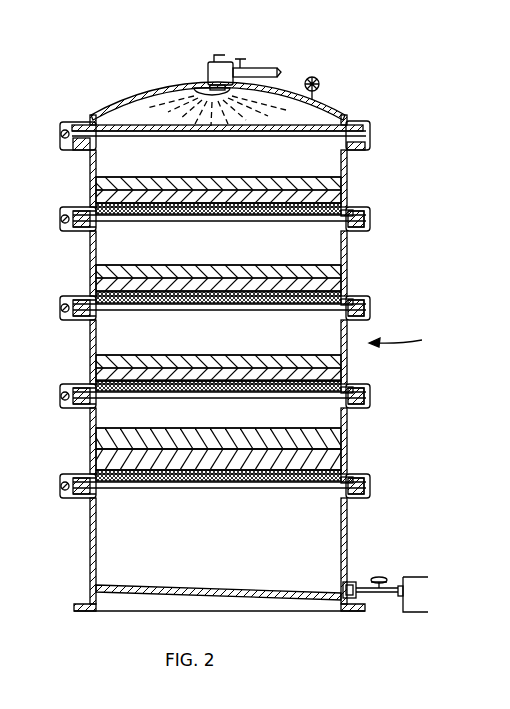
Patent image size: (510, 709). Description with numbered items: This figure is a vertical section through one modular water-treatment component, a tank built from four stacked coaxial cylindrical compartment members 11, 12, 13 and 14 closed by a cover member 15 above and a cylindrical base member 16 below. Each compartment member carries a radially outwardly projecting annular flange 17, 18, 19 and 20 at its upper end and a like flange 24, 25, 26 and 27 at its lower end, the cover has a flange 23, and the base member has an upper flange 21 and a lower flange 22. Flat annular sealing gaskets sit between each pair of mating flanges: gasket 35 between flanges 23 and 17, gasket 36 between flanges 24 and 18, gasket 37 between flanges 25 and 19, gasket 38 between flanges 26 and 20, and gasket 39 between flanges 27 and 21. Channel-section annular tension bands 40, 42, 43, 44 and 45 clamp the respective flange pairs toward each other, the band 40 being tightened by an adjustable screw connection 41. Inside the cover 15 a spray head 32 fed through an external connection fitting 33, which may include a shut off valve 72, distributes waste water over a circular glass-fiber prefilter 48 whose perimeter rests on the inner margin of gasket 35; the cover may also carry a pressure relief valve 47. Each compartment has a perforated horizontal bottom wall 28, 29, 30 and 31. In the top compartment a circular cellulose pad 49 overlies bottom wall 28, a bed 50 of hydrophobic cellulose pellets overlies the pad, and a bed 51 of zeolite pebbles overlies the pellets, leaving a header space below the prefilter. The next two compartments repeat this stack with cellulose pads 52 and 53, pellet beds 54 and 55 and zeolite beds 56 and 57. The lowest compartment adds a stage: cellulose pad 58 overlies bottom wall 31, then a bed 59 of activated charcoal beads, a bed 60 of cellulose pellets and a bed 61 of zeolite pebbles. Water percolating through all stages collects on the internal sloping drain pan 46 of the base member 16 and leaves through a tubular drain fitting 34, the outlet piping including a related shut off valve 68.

The cylindrical compartment member 11 is at (90, 186).
The cylindrical compartment member 12 is at (90, 270).
The cylindrical compartment member 13 is at (90, 362).
The cylindrical compartment member 14 is at (90, 445).
The cover member 15 is at (138, 102).
The cylindrical base member 16 is at (90, 553).
The annular flange 17 is at (370, 141).
The annular flange 18 is at (371, 228).
The annular flange 19 is at (371, 317).
The annular flange 20 is at (371, 405).
The annular flange 21 is at (371, 495).
The annular flange 22 is at (82, 605).
The annular flange 23 is at (370, 127).
The annular flange 24 is at (371, 214).
The annular flange 25 is at (371, 303).
The annular flange 26 is at (371, 391).
The annular flange 27 is at (371, 481).
The perforated horizontal bottom wall 28 is at (212, 222).
The perforated horizontal bottom wall 29 is at (212, 311).
The perforated horizontal bottom wall 30 is at (212, 400).
The perforated horizontal bottom wall 31 is at (214, 490).
The spray head 32 is at (198, 86).
The external connection fitting 33 is at (211, 70).
The tubular drain fitting 34 is at (355, 582).
The flat annular sealing gasket 35 is at (297, 137).
The flat annular sealing gasket 36 is at (100, 222).
The flat annular sealing gasket 37 is at (100, 311).
The flat annular sealing gasket 38 is at (100, 400).
The flat annular sealing gasket 39 is at (100, 490).
The annular tension band 40 is at (74, 148).
The adjustable screw connection 41 is at (60, 130).
The tension band 42 is at (76, 233).
The tension band 43 is at (76, 322).
The annular tension band 44 is at (76, 410).
The annular tension band 45 is at (76, 500).
The internal sloping drain pan 46 is at (218, 586).
The pressure relief valve 47 is at (320, 81).
The circular prefilter 48 is at (212, 132).
The circular pad 49 is at (352, 208).
The bed of cellulose pellets 50 is at (240, 192).
The bed of zeolite pebbles 51 is at (196, 180).
The cellulose pad 52 is at (352, 297).
The cellulose pad 53 is at (352, 385).
The bed of cellulose pellets 54 is at (285, 282).
The bed of cellulose pellets 55 is at (278, 370).
The bed of zeolite pebbles 56 is at (225, 272).
The bed of zeolite pebbles 57 is at (216, 364).
The cellulose pad 58 is at (352, 476).
The bed of activated charcoal beads 59 is at (306, 462).
The bed of cellulose pellets 60 is at (276, 450).
The bed of zeolite pebbles 61 is at (225, 434).
The shut off valve 68 is at (383, 577).
The shut off valve 72 is at (241, 64).